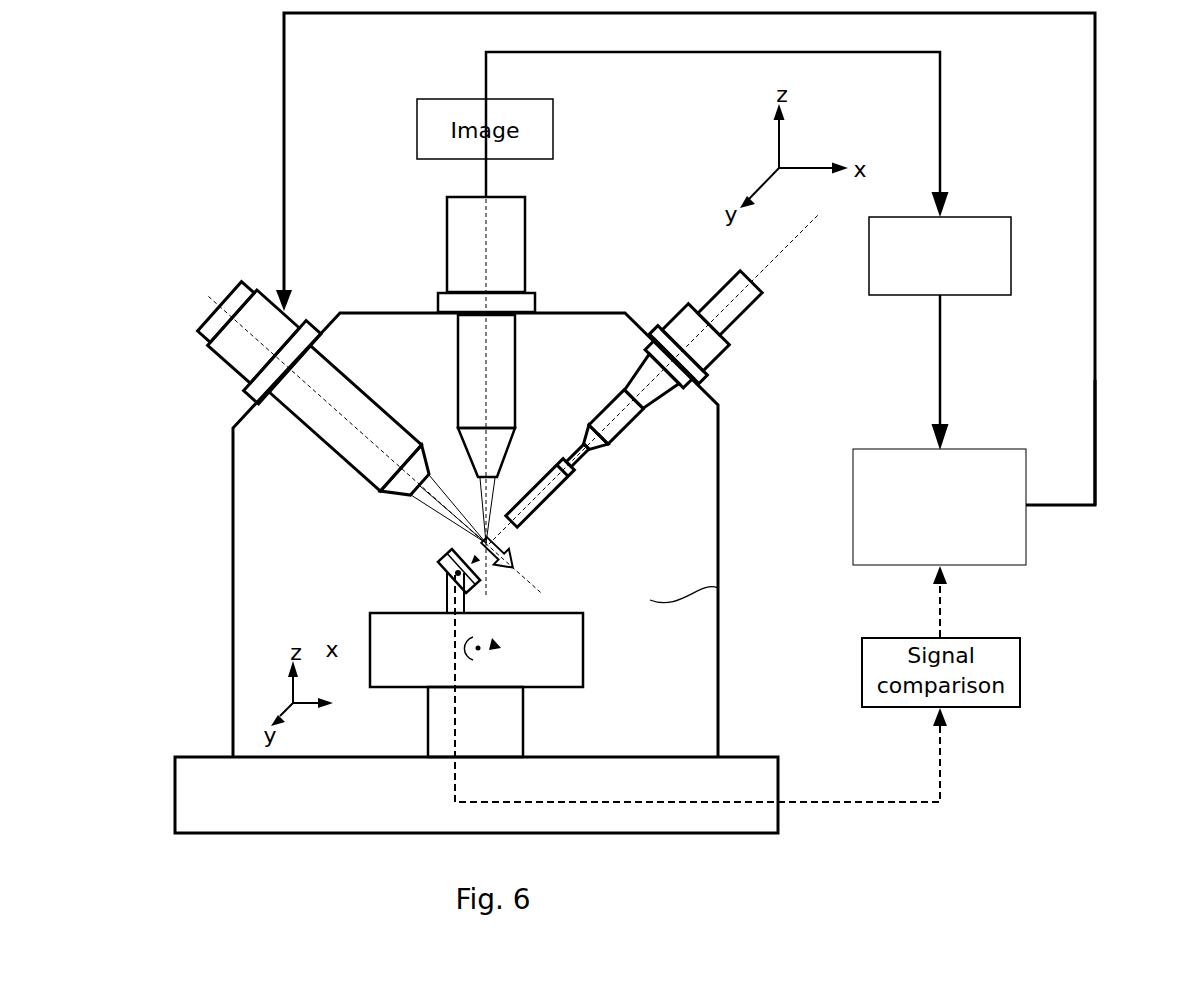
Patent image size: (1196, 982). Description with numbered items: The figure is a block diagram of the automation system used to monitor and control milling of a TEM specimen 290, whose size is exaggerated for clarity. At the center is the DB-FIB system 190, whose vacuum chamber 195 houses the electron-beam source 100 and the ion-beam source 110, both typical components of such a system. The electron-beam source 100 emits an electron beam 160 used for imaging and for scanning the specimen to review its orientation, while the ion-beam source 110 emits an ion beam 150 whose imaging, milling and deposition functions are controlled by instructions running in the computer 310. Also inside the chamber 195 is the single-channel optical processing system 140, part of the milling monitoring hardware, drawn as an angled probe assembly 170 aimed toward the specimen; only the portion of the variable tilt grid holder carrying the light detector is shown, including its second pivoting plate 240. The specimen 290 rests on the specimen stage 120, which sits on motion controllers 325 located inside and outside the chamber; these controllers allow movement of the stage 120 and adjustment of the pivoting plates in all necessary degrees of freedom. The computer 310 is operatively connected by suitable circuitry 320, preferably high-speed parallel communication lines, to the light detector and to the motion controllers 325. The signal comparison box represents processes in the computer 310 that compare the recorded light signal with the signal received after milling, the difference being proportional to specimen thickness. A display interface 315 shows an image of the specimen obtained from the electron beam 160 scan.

The electron-beam source 100 is at (525, 252).
The ion-beam source 110 is at (232, 378).
The specimen stage 120 is at (585, 643).
The single-channel optical processing system 140 is at (620, 393).
The ion beam 150 is at (440, 510).
The electron beam 160 is at (452, 453).
The detector probe 170 is at (508, 527).
The DB-FIB system 190 is at (233, 592).
The vacuum chamber 195 is at (312, 508).
The second pivoting plate 240 is at (425, 585).
The TEM specimen 290 is at (512, 556).
The computer 310 is at (962, 450).
The display interface 315 is at (968, 217).
The circuitry 320 is at (1098, 432).
The motion controllers 325 is at (428, 705).